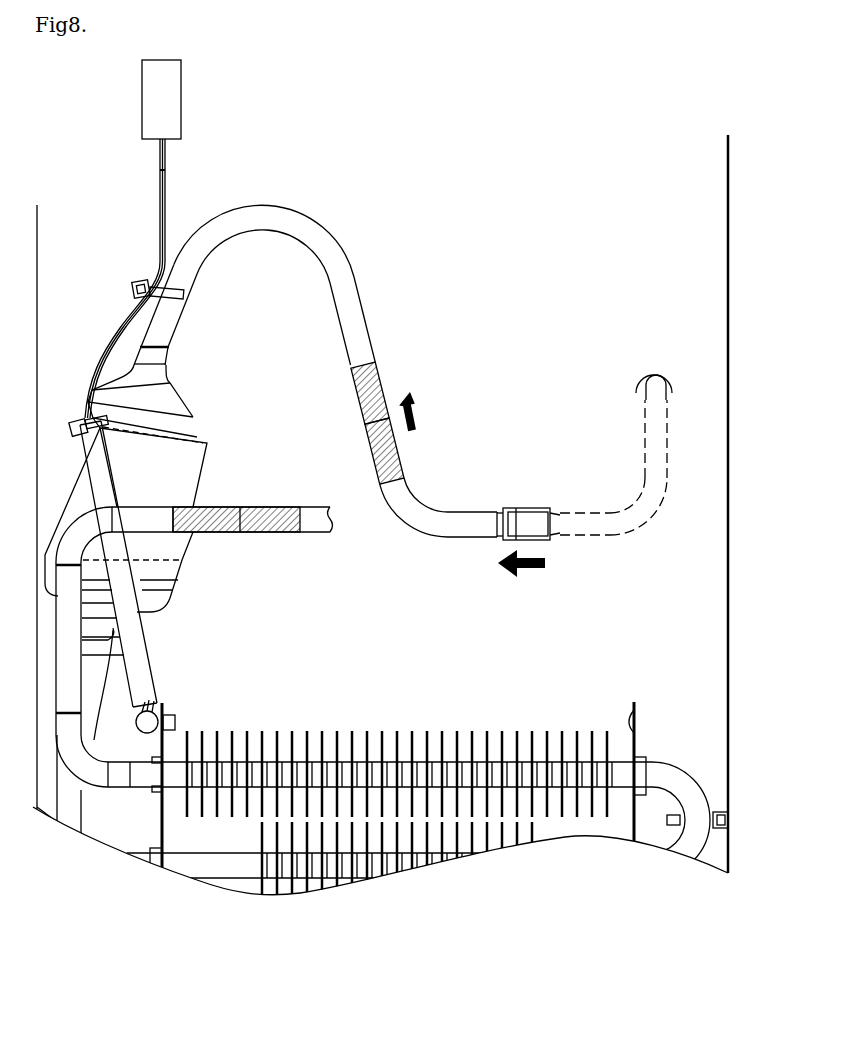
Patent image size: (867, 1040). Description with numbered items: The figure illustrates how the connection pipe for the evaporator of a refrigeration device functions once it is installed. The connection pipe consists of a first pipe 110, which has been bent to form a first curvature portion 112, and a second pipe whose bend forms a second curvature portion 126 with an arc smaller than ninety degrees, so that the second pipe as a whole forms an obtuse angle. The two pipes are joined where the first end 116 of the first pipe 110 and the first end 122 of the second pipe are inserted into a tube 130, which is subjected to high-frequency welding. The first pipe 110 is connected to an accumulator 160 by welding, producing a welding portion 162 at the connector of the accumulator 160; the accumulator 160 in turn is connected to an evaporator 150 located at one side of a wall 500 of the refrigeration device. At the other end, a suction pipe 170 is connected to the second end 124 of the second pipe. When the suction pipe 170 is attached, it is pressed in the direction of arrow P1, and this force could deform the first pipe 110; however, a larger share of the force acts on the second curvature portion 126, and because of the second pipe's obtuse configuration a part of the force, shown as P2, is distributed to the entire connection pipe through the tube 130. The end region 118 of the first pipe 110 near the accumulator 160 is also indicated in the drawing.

The first pipe 110 is at (340, 376).
The first curvature portion 112 is at (301, 230).
The first end of the first pipe 116 is at (383, 389).
The discharge end of pipe 118 is at (160, 331).
The first end of the second pipe 122 is at (393, 448).
The second end of the second pipe 124 is at (535, 518).
The second curvature portion 126 is at (402, 521).
The tube 130 is at (372, 418).
The evaporator 150 is at (425, 870).
The accumulator 160 is at (194, 473).
The welding portion 162 is at (158, 360).
The suction pipe 170 is at (658, 447).
The wall 500 is at (733, 227).
The force or pressure direction P1 is at (534, 563).
The distributed force P2 is at (420, 411).